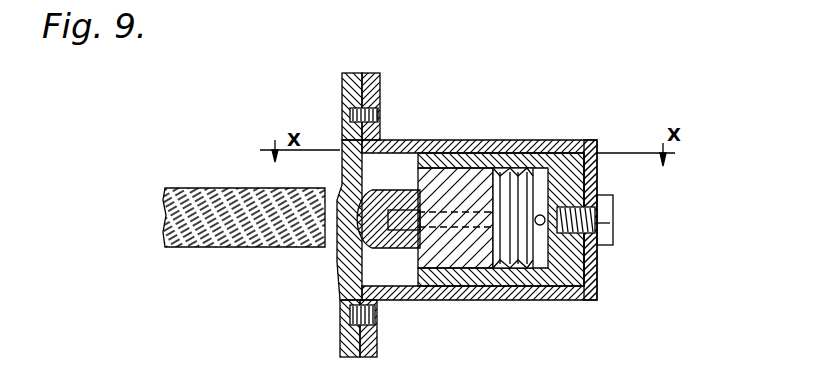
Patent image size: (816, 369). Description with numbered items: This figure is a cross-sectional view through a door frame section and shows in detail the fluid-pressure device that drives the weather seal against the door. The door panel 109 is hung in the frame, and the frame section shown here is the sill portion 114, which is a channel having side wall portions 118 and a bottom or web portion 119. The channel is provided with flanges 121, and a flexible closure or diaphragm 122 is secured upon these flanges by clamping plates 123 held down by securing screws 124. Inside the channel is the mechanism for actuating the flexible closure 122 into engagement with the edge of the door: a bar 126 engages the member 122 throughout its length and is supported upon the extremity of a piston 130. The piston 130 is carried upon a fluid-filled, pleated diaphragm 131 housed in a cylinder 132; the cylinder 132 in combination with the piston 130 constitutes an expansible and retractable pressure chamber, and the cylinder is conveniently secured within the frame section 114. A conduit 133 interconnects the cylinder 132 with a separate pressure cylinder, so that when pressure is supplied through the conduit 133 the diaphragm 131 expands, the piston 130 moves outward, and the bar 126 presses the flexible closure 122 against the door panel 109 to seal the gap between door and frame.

The door panel 109 is at (240, 247).
The sill portion 114 is at (340, 347).
The side wall portions 118 is at (532, 297).
The bottom or web portions 119 is at (590, 262).
The flanges 121 is at (380, 88).
The flexible closure or diaphragm 122 is at (343, 250).
The clamping plates 123 is at (342, 87).
The securing screws 124 is at (342, 115).
The bar 126 is at (388, 236).
The piston 130 is at (450, 184).
The fluid-filled pleated diaphragm 131 is at (511, 166).
The cylinder 132 is at (538, 158).
The conduit 133 is at (560, 201).